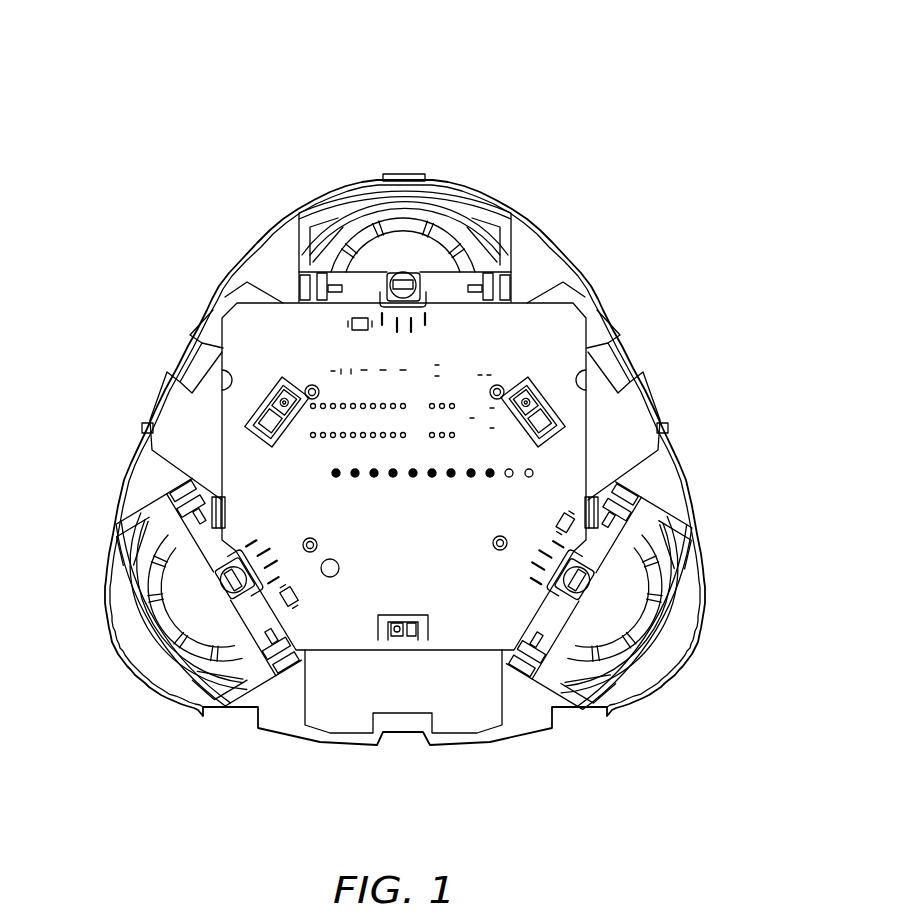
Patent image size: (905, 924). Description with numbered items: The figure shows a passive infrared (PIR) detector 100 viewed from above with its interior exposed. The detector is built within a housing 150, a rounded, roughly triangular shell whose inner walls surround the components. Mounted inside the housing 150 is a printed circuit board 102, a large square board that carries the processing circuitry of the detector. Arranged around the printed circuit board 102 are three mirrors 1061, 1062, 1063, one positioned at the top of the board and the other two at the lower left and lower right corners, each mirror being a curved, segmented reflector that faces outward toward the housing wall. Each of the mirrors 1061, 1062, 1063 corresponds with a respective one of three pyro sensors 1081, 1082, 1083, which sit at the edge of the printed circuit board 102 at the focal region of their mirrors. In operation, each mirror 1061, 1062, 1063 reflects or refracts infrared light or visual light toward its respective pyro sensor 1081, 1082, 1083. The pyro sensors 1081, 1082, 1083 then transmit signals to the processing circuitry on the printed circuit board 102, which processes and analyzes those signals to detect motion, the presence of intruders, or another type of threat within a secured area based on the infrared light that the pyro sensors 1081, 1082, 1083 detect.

The PIR detector 100 is at (652, 393).
The printed circuit board 102 is at (553, 343).
The housing 150 is at (663, 463).
The mirror 1061 is at (441, 213).
The mirror 1062 is at (187, 645).
The mirror 1063 is at (637, 632).
The pyro sensor 1081 is at (403, 283).
The pyro sensor 1082 is at (235, 585).
The pyro sensor 1083 is at (583, 587).